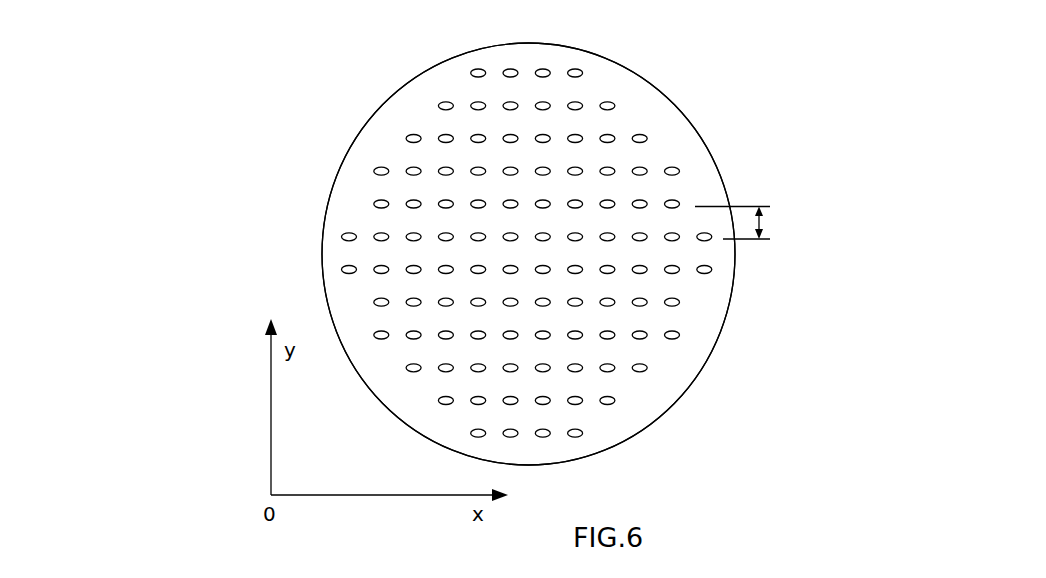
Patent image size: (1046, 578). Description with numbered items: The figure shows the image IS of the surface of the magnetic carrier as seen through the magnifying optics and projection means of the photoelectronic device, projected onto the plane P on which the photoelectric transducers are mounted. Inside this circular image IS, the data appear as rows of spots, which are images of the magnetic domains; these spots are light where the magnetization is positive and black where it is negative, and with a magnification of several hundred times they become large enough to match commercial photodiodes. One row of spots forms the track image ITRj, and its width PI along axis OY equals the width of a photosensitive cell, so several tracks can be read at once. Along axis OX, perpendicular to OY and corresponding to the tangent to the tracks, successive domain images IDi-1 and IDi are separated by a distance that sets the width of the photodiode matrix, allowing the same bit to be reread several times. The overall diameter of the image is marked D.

The image of surface IS is at (618, 85).
The track image ITRj is at (615, 200).
The image of magnetic domain IDi-1 is at (567, 200).
The image of magnetic domain IDi is at (540, 203).
The width of track image PI is at (745, 223).
The diameter of image surface D is at (817, 465).